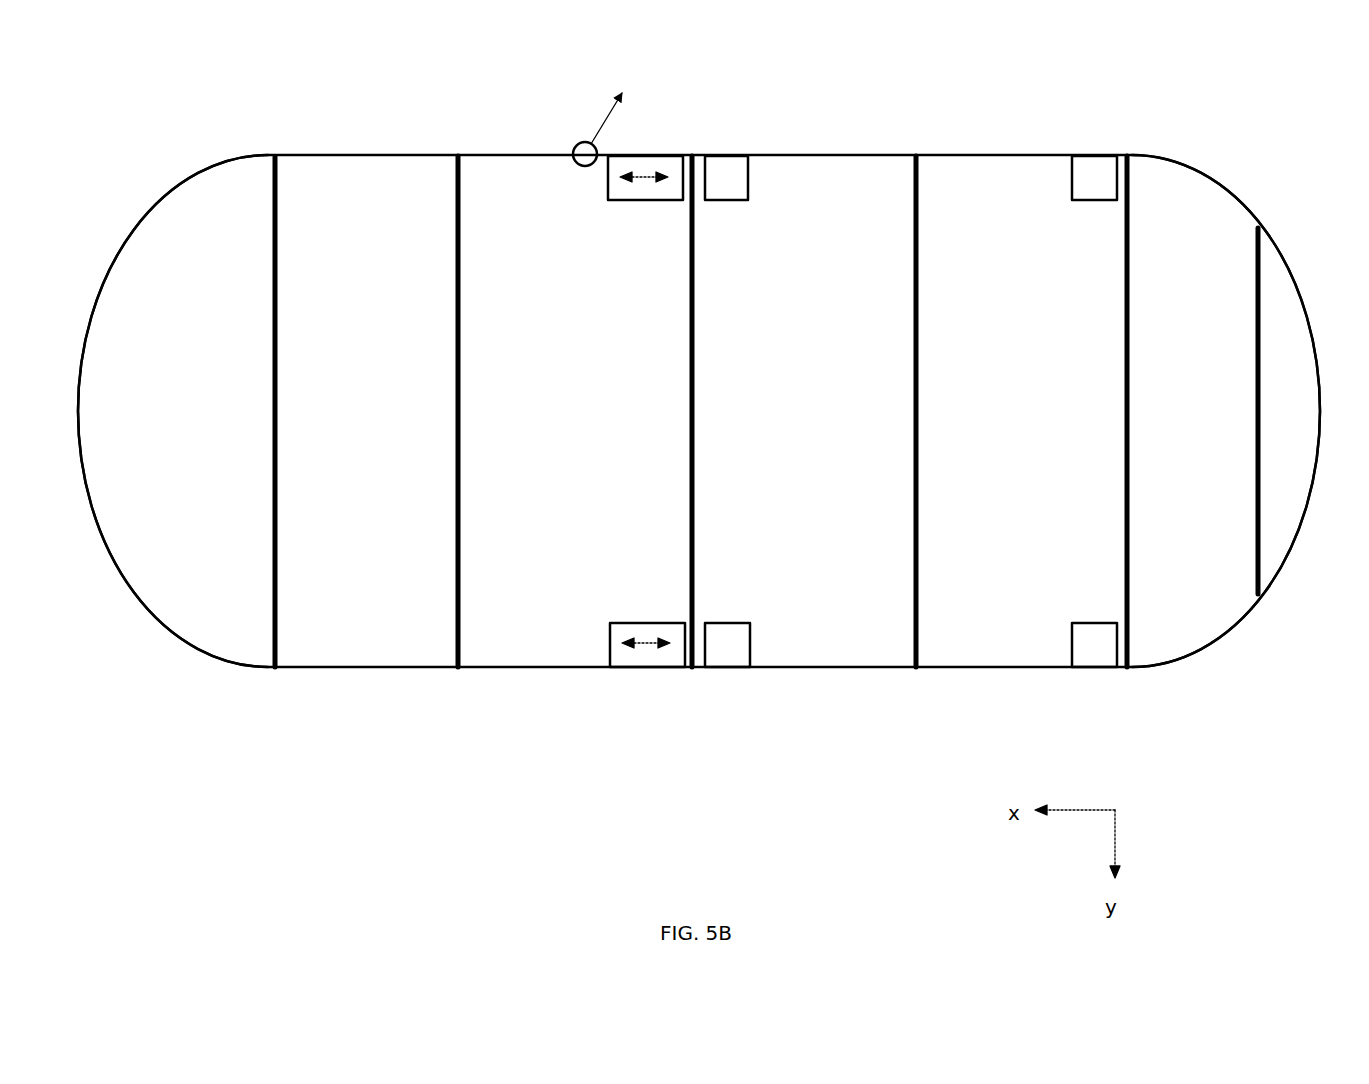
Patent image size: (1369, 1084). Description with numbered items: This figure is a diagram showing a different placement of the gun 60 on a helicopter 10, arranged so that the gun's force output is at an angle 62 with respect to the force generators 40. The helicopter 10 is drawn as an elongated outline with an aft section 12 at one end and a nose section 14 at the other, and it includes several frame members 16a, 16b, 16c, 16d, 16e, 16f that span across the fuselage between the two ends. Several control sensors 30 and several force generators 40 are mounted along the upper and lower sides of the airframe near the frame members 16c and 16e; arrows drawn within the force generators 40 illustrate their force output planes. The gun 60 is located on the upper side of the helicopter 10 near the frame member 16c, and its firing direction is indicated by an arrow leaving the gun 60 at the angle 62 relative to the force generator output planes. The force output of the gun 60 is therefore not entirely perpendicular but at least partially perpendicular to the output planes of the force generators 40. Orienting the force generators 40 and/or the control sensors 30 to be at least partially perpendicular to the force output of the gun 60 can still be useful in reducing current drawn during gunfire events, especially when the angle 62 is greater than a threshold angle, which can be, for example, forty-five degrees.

The helicopter 10 is at (398, 97).
The aft section 12 is at (155, 165).
The nose section 14 is at (1240, 172).
The frame member 16a is at (273, 668).
The frame member 16b is at (456, 668).
The frame member 16c is at (690, 670).
The frame member 16d is at (916, 668).
The frame member 16e is at (1128, 668).
The frame member 16f is at (1258, 595).
The control sensor 30 is at (725, 200).
The force generator 40 is at (620, 200).
The gun 60 is at (575, 161).
The angle 62 is at (608, 140).